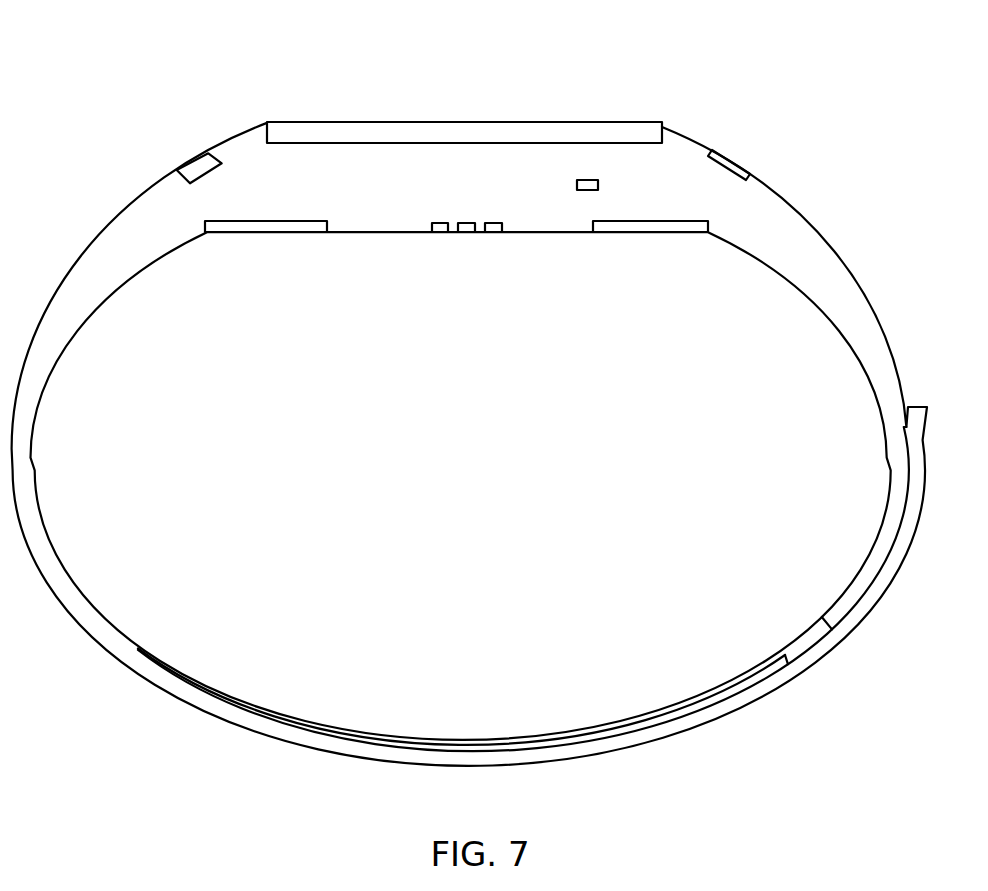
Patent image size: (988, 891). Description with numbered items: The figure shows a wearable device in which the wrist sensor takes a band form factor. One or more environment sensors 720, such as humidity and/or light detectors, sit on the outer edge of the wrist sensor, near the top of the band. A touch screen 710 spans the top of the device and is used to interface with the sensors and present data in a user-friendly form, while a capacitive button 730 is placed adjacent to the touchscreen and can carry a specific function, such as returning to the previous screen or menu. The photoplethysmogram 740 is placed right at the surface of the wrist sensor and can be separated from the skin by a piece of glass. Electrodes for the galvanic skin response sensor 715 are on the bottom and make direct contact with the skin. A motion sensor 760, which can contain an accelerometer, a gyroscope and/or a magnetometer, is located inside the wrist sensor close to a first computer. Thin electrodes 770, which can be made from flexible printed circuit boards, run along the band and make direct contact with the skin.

The touch screen 710 is at (450, 122).
The galvanic skin response sensor electrodes 715 is at (285, 252).
The environment sensors 720 is at (193, 155).
The capacitive button 730 is at (733, 152).
The photoplethysmogram 740 is at (466, 240).
The motion sensor 760 is at (568, 184).
The thin electrodes 770 is at (785, 630).